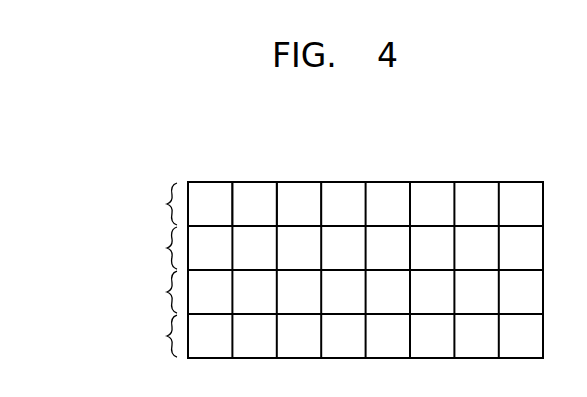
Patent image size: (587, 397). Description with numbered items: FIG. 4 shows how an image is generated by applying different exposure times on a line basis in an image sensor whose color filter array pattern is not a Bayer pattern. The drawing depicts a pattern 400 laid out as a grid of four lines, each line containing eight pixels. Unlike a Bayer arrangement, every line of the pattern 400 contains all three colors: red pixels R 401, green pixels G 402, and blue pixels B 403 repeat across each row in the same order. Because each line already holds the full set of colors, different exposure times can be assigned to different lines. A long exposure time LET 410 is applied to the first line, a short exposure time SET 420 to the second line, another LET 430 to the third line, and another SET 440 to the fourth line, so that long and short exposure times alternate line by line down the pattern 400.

The pattern 400 is at (478, 181).
The red pixel R 401 is at (205, 182).
The green pixel G 402 is at (261, 182).
The blue pixel B 403 is at (304, 182).
The LET 410 is at (113, 204).
The SET 420 is at (113, 248).
The LET 430 is at (113, 292).
The SET 440 is at (113, 336).